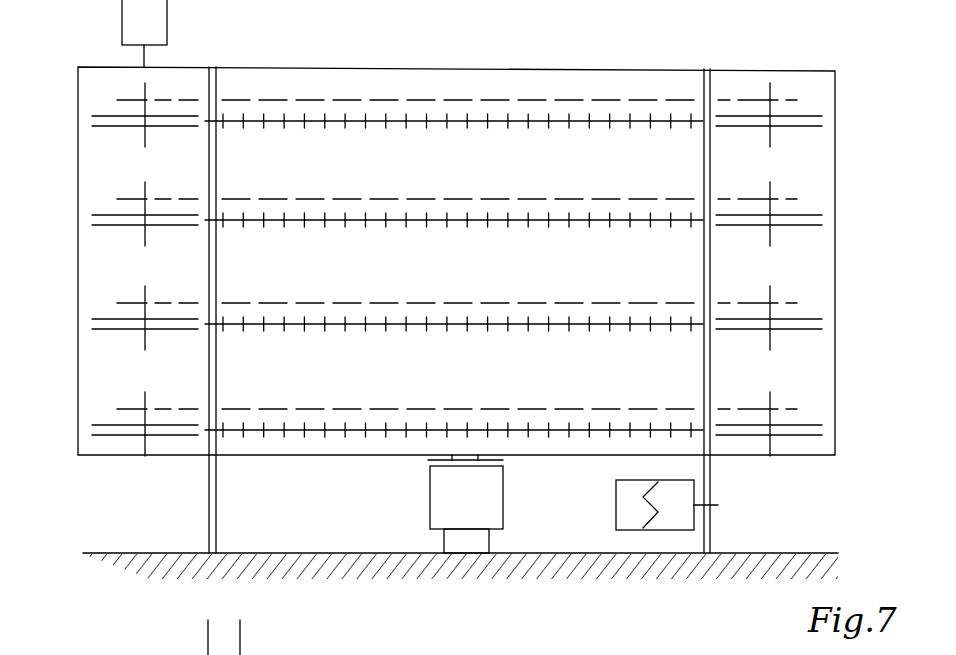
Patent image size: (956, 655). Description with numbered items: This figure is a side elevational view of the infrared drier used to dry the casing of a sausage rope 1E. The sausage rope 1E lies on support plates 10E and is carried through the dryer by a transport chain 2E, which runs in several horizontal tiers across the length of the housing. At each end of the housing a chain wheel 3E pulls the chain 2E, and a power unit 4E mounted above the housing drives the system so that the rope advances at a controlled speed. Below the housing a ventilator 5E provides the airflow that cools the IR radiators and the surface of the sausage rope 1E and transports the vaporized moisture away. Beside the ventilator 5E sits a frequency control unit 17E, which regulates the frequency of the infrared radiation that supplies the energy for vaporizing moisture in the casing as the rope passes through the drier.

The sausage rope 1E is at (240, 100).
The transport chain 2E is at (277, 118).
The chain wheel 3E is at (106, 116).
The power unit 4E is at (154, 21).
The ventilator 5E is at (437, 492).
The support plate 10E is at (327, 117).
The frequency control unit 17E is at (616, 498).